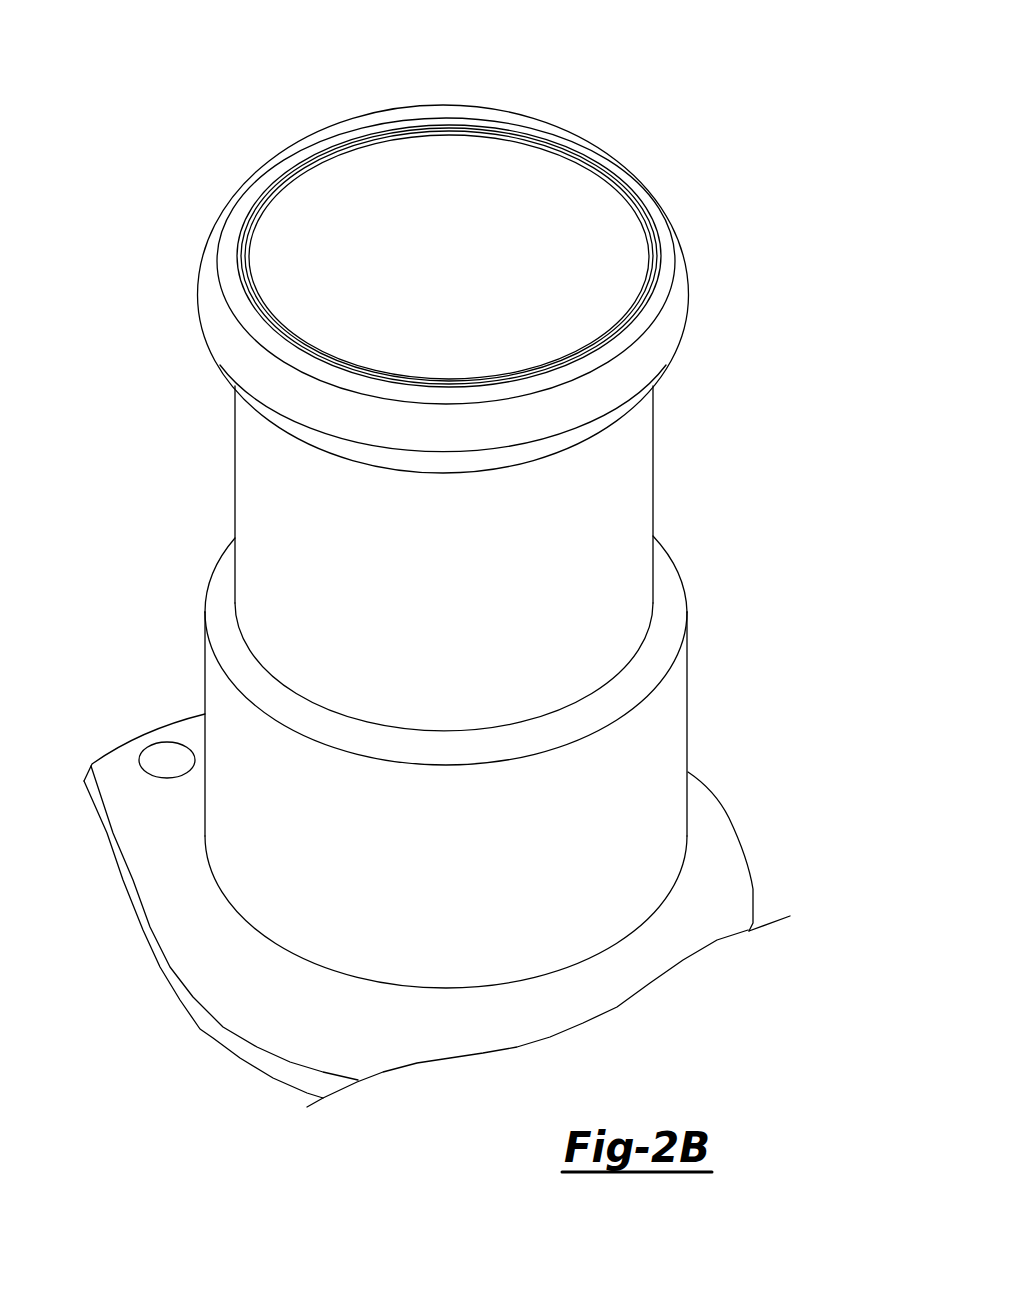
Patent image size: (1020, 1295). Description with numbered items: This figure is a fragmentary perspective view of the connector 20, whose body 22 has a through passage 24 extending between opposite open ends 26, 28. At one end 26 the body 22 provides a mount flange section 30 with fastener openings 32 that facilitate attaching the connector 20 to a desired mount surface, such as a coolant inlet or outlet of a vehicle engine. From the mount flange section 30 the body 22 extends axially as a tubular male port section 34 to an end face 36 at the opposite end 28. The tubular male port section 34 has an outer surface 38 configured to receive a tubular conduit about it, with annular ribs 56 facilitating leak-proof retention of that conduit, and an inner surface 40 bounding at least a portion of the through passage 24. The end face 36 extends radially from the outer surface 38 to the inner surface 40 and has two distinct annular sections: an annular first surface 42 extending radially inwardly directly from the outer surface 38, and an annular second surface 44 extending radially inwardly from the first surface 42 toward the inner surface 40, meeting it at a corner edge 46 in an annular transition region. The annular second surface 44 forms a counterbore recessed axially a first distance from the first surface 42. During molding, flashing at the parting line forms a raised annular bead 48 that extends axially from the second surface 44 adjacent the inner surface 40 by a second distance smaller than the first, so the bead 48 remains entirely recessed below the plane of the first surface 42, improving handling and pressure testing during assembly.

The connector 20 is at (147, 283).
The body 22 is at (667, 712).
The through passage 24 is at (513, 133).
The open end 26 is at (213, 1038).
The open end 28 is at (478, 118).
The mount flange section 30 is at (755, 816).
The fastener openings 32 is at (152, 750).
The tubular male port section 34 is at (177, 435).
The end face 36 is at (270, 150).
The outer surface 38 is at (667, 426).
The inner surface 40 is at (558, 159).
The annular first surface 42 is at (233, 213).
The annular second surface 44 is at (321, 142).
The corner edge 46 is at (247, 253).
The bead 48 is at (374, 136).
The annular ribs 56 is at (222, 362).